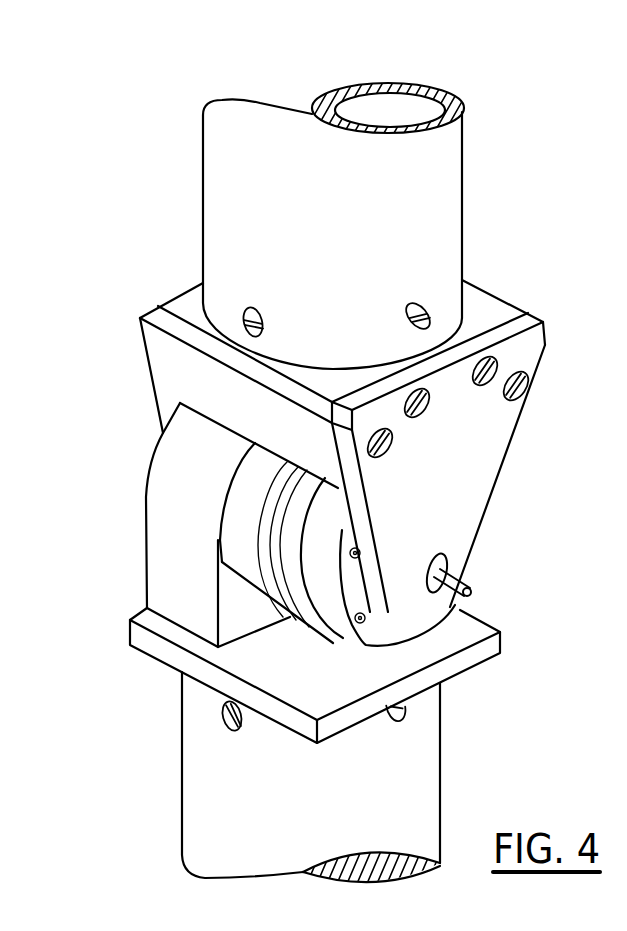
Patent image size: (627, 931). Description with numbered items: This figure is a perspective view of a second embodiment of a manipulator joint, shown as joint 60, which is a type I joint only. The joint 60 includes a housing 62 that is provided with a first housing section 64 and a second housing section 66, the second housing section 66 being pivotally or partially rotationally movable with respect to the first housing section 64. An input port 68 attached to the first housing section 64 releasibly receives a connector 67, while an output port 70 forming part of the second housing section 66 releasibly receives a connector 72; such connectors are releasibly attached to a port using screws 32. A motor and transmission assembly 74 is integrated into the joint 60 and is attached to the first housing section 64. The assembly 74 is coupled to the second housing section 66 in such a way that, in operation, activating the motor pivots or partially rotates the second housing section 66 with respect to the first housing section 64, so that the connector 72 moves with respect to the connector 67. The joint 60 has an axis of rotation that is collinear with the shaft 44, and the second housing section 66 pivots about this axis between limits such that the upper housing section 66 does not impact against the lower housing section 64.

The manipulator joint 60 is at (117, 148).
The connector 72 is at (462, 142).
The screws 32 is at (250, 305).
The output port 70 is at (468, 316).
The second housing section 66 is at (533, 362).
The housing 62 is at (145, 351).
The first housing section 64 is at (162, 557).
The motor and transmission assembly 74 is at (297, 624).
The shaft 44 is at (470, 592).
The input port 68 is at (453, 682).
The connector 67 is at (427, 790).